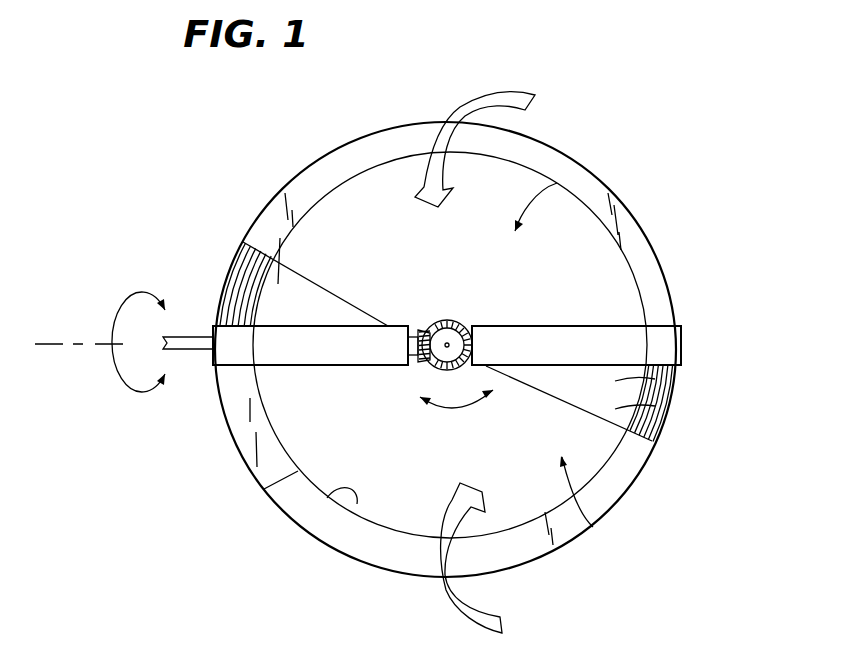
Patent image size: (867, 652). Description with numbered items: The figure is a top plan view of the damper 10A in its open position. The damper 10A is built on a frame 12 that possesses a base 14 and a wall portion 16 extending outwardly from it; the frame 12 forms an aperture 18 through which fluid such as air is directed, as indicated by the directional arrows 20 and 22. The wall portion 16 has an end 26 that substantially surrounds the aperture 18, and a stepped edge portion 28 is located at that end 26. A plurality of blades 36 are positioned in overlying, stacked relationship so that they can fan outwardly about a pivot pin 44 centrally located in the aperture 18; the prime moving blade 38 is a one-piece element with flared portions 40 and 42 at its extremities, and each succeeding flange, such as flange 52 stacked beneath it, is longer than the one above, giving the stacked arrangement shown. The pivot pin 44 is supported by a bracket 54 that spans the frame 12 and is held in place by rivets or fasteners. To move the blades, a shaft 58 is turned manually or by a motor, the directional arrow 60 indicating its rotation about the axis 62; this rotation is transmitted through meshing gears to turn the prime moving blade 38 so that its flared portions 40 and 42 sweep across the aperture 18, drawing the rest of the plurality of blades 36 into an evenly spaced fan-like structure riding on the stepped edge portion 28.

The damper 10A is at (188, 462).
The frame 12 is at (670, 258).
The base 14 is at (325, 173).
The wall portion 16 is at (598, 470).
The aperture 18 is at (515, 507).
The directional arrow 20 is at (507, 93).
The directional arrow 22 is at (463, 613).
The end 26 is at (264, 489).
The stepped edge portion 28 is at (357, 504).
The plurality of blades 36 is at (593, 527).
The prime moving blade 38 is at (666, 423).
The flared portion 40 is at (657, 381).
The flared portion 42 is at (280, 238).
The pivot pin 44 is at (447, 345).
The flange 52 is at (557, 183).
The bracket 54 is at (667, 348).
The shaft 58 is at (193, 337).
The directional arrow 60 is at (118, 306).
The axis 62 is at (45, 346).